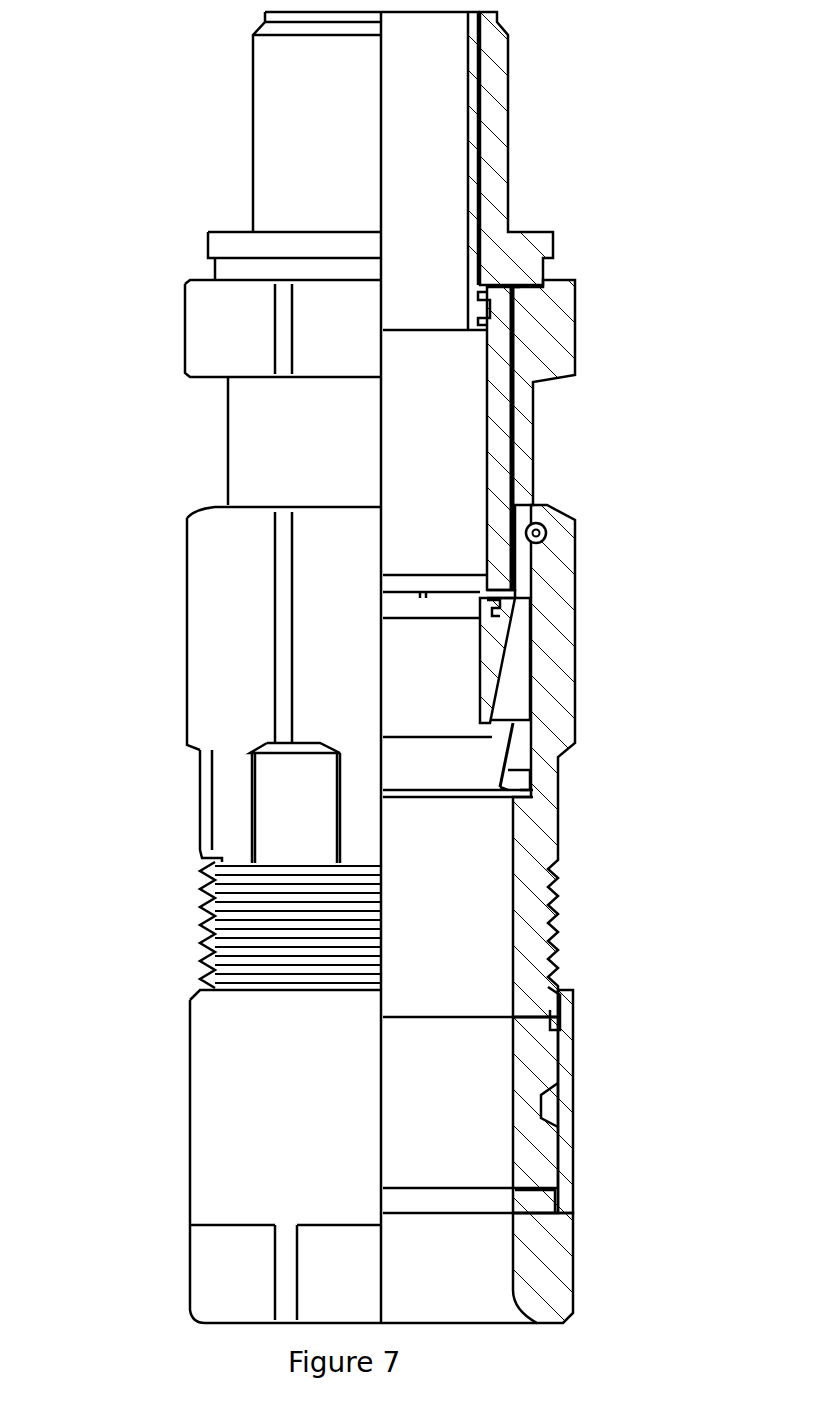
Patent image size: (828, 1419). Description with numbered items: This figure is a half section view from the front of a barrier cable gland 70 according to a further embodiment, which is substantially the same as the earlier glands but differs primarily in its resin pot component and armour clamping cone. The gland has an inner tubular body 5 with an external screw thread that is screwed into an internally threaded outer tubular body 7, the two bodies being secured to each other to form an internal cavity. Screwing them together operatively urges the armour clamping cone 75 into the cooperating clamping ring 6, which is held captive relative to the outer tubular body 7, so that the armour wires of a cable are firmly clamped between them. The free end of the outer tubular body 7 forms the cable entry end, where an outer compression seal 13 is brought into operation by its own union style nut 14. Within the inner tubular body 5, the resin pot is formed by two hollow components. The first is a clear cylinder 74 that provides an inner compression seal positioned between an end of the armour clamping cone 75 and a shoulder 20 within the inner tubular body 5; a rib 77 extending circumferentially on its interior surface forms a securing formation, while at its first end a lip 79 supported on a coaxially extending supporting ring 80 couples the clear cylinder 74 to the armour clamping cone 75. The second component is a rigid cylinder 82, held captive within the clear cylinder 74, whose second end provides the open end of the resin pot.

The barrier cable gland 70 is at (95, 212).
The inner tubular body 5 is at (497, 60).
The rigid cylinder 82 is at (482, 117).
The shoulder 20 is at (513, 285).
The rib 77 is at (485, 312).
The clear cylinder 74 is at (497, 393).
The supporting ring 80 is at (512, 597).
The lip 79 is at (502, 613).
The armour clamping cone 75 is at (497, 647).
The clamping ring 6 is at (517, 742).
The outer tubular body 7 is at (530, 810).
The outer compression seal 13 is at (528, 1063).
The union style nut 14 is at (550, 1287).